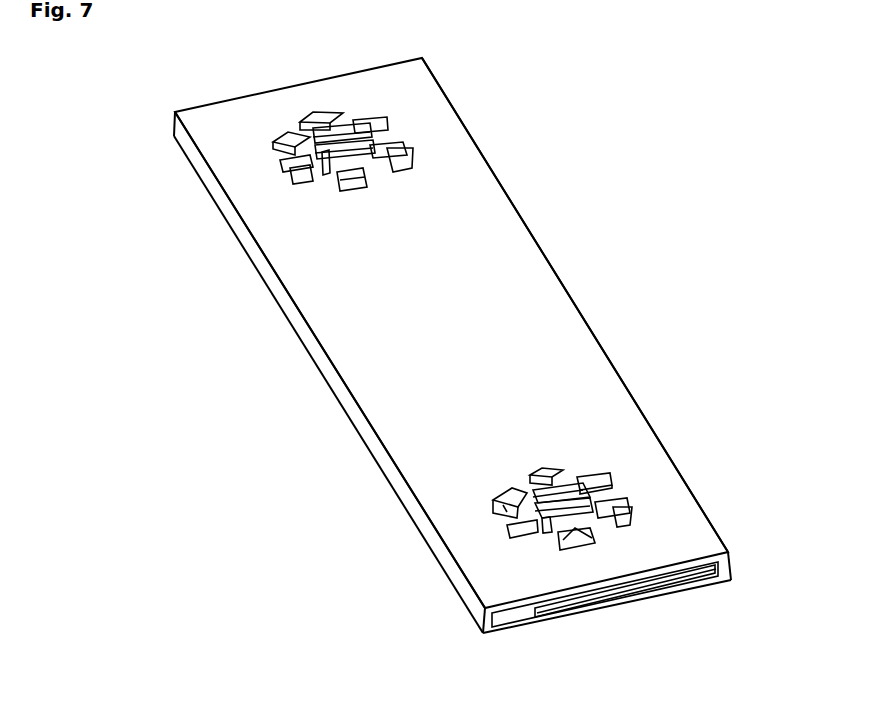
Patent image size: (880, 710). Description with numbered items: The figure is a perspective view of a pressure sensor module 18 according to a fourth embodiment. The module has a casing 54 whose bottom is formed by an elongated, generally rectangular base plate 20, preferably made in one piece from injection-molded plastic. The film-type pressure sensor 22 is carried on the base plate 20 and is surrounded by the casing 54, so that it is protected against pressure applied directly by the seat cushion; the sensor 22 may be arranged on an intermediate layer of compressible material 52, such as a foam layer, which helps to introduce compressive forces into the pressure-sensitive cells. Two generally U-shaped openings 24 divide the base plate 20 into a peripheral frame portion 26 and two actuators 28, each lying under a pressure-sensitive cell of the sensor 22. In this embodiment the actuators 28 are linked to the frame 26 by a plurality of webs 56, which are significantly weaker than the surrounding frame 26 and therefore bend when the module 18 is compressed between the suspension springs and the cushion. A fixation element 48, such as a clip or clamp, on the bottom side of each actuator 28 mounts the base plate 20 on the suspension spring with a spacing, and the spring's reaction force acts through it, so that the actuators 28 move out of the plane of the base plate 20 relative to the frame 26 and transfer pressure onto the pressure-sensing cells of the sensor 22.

The pressure sensor module 18 is at (660, 326).
The base plate 20 is at (465, 122).
The pressure sensor 22 is at (628, 597).
The U-shaped opening 24 is at (276, 143).
The frame portion 26 is at (537, 280).
The actuator 28 is at (346, 180).
The fixation element 48 is at (353, 152).
The intermediate layer of compressible material 52 is at (683, 574).
The casing 54 is at (351, 421).
The web 56 is at (348, 118).